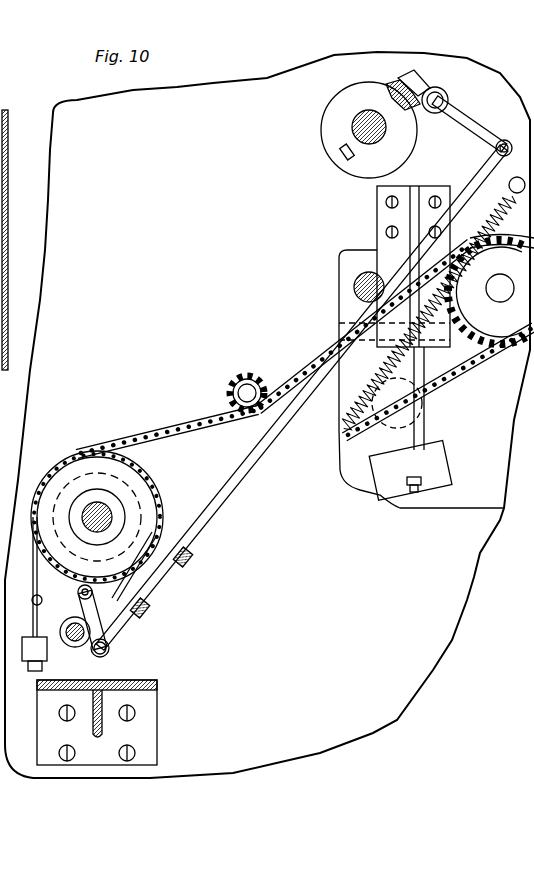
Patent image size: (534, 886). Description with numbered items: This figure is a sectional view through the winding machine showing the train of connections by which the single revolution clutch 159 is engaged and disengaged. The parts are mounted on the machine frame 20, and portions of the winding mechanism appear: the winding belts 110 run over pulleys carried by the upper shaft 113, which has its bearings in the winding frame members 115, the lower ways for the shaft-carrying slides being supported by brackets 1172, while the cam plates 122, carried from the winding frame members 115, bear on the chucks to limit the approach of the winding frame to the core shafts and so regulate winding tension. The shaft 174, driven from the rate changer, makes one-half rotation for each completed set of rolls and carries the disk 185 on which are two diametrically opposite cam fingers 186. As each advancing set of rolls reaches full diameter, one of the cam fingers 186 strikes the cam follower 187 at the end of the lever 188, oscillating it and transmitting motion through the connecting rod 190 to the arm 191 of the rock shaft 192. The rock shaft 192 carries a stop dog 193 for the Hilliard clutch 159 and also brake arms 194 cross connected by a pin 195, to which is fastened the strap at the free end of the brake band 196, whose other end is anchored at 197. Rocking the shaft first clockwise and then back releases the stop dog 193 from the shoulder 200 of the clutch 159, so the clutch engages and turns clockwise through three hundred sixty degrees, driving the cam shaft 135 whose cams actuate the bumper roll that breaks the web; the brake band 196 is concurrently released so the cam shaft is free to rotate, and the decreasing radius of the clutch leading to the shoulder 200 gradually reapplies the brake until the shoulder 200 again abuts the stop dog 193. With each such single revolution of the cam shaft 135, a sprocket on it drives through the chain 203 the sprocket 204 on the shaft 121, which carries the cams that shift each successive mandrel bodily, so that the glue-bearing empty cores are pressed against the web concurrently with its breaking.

The machine frame 20 is at (444, 600).
The winding belts 110 is at (434, 412).
The upper shaft 113 is at (354, 288).
The winding frame members 115 is at (430, 478).
The shaft 121 is at (500, 300).
The cam plates 122 is at (356, 452).
The cam shaft 135 is at (85, 512).
The clutch 159 is at (92, 478).
The shaft 174 is at (352, 128).
The disk 185 is at (336, 143).
The cam fingers 186 is at (394, 86).
The cam follower 187 is at (421, 87).
The lever 188 is at (471, 118).
The connecting rod 190 is at (484, 178).
The arm 191 is at (106, 656).
The rock shaft 192 is at (90, 634).
The stop dog 193 is at (108, 620).
The brake arms 194 is at (78, 593).
The pin 195 is at (132, 598).
The brake band 196 is at (158, 530).
The anchor 197 is at (33, 605).
The shoulder 200 is at (153, 537).
The chain 203 is at (178, 433).
The sprocket 204 is at (470, 360).
The brackets 1172 is at (389, 238).